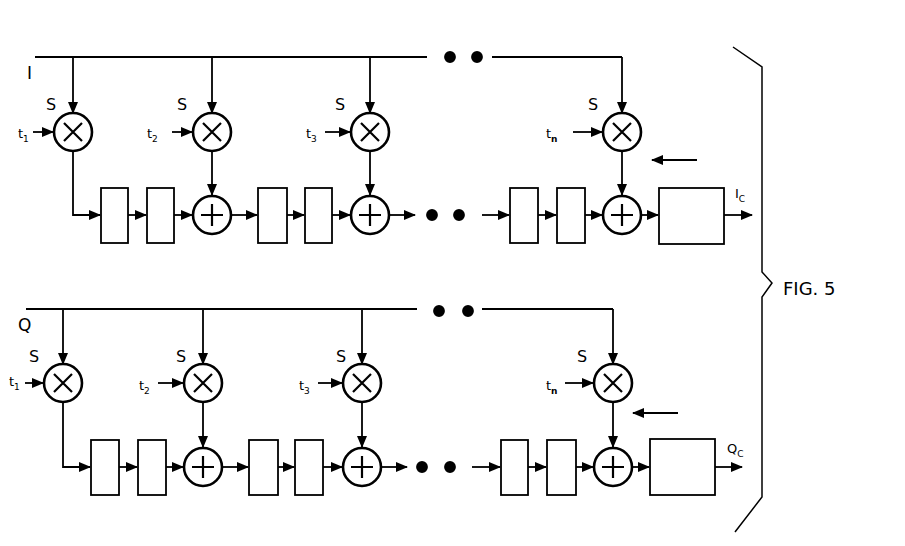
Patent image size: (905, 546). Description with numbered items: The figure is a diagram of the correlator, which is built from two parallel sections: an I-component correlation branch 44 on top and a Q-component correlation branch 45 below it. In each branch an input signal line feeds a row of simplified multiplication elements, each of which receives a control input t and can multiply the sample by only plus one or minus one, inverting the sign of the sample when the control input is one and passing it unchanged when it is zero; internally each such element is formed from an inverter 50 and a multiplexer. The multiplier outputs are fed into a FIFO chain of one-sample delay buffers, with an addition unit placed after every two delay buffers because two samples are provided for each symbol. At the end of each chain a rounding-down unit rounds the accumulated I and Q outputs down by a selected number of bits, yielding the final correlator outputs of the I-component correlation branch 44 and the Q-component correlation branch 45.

The I-component correlation branch 44 is at (691, 167).
The Q-component correlation branch 45 is at (676, 412).
The inverter 50 is at (404, 544).